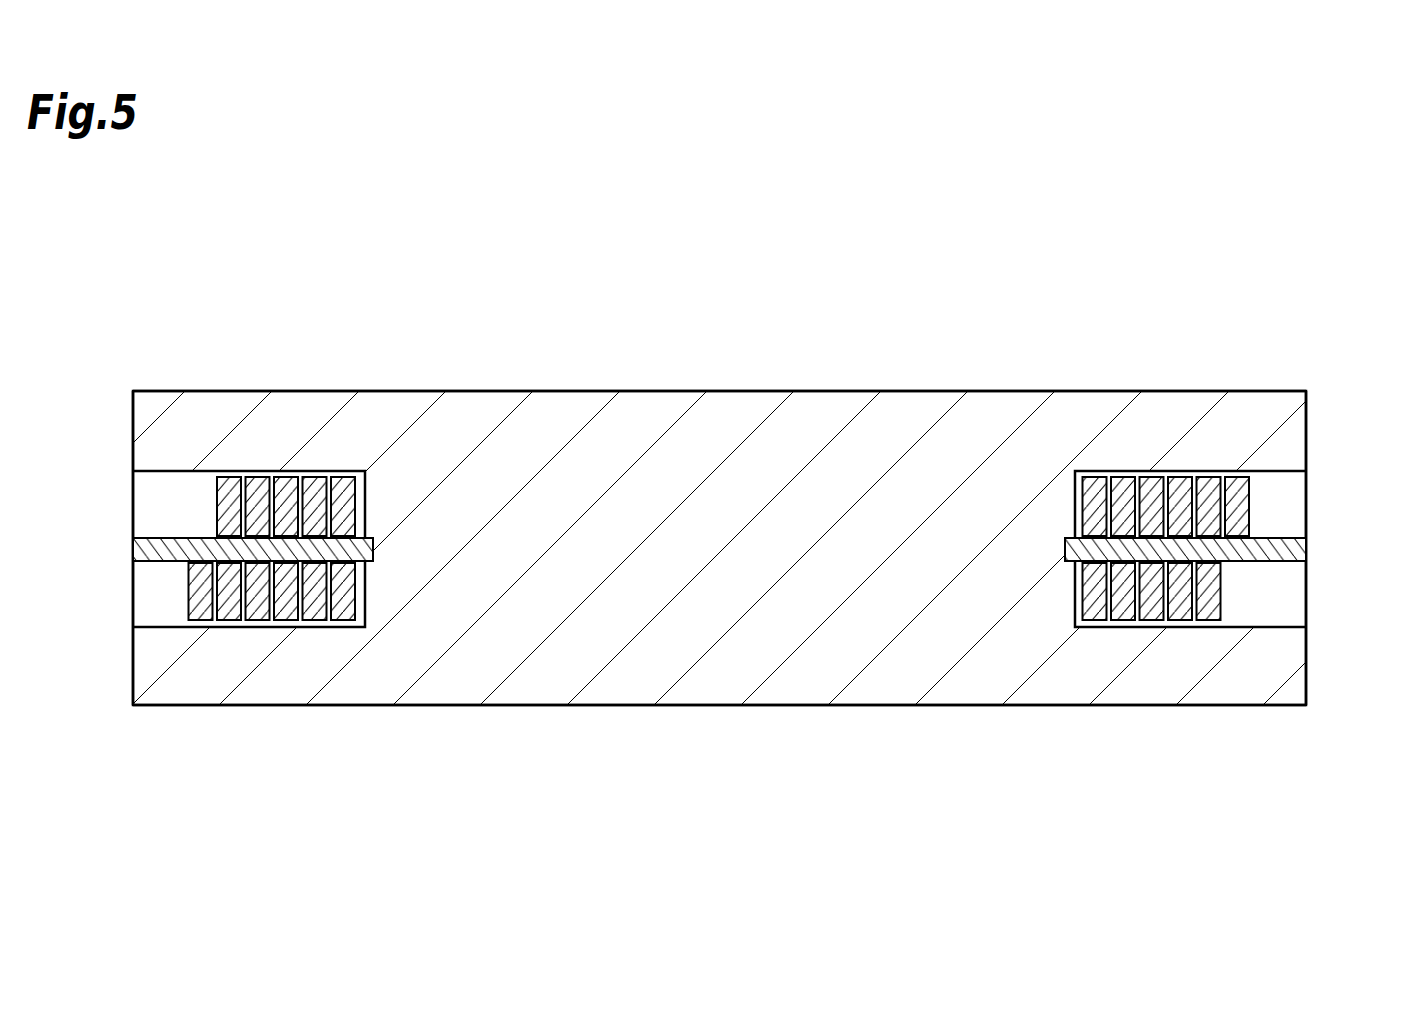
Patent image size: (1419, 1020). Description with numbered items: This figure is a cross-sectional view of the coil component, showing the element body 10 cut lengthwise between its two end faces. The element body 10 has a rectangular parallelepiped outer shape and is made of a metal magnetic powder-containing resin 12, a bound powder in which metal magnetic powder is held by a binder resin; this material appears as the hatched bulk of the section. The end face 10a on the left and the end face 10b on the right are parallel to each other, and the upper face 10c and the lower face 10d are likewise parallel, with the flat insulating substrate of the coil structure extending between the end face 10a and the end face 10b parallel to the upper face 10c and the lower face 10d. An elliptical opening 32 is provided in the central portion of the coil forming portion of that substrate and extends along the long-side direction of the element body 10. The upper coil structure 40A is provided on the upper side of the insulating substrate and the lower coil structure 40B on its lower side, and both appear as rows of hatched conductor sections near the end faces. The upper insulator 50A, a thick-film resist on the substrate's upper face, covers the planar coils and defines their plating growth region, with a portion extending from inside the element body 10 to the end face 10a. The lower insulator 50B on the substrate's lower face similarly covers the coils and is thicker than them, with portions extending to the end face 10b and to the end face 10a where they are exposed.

The element body 10 is at (148, 368).
The metal magnetic powder-containing resin 12 is at (498, 402).
The end face 10a is at (133, 648).
The end face 10b is at (1307, 424).
The upper face 10c is at (829, 392).
The lower face 10d is at (1012, 706).
The elliptical opening 32 is at (375, 542).
The upper coil structure 40A is at (1262, 507).
The lower coil structure 40B is at (178, 592).
The upper insulator 50A is at (178, 502).
The lower insulator 50B is at (1268, 598).